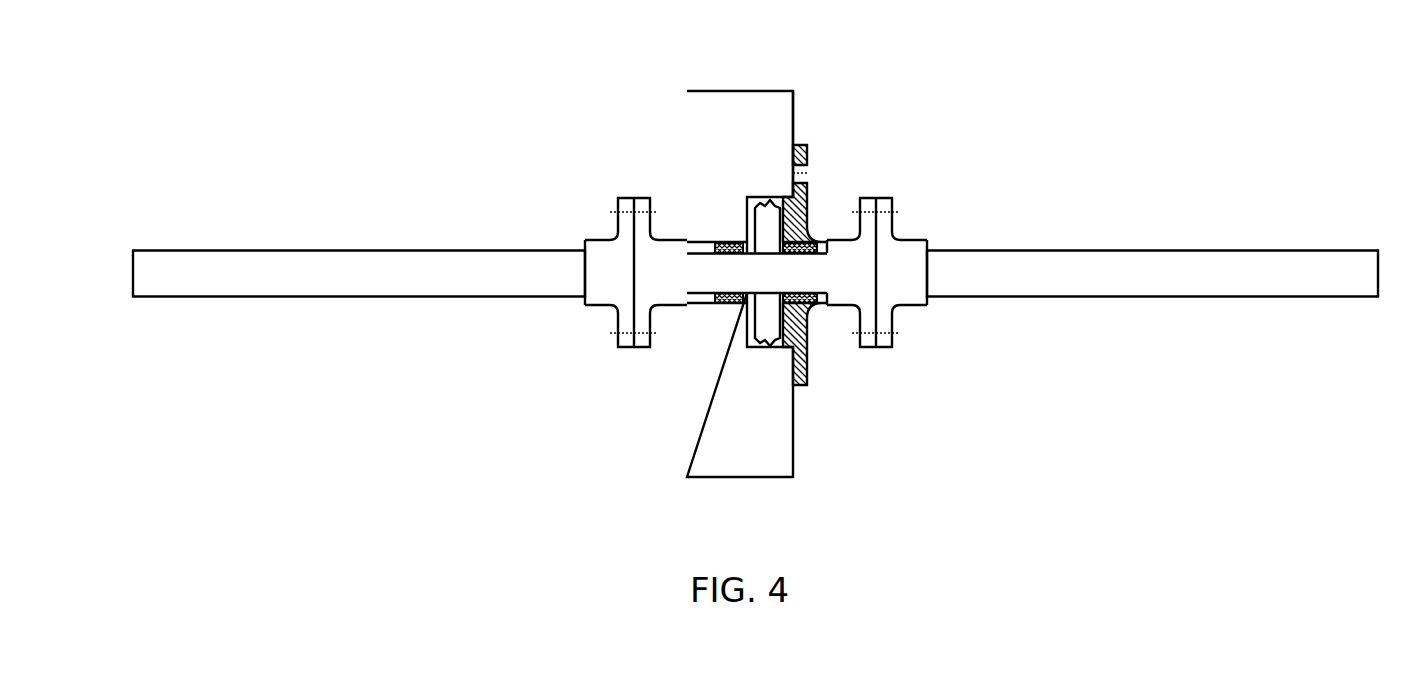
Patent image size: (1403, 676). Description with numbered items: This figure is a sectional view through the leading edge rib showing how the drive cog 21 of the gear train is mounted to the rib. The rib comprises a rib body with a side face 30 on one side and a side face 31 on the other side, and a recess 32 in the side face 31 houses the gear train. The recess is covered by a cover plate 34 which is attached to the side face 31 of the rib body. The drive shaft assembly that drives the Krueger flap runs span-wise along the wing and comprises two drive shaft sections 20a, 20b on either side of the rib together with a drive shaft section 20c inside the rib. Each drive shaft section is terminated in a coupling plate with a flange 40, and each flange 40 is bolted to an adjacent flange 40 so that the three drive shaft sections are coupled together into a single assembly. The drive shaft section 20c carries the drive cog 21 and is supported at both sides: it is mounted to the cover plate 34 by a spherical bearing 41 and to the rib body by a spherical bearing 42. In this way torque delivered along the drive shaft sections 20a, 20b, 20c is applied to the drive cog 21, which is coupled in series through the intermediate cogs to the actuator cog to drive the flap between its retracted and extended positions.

The drive shaft section 20a is at (1182, 249).
The drive shaft section 20b is at (322, 249).
The drive shaft section 20c is at (763, 272).
The drive cog 21 is at (772, 218).
The side face 30 is at (686, 389).
The side face 31 is at (793, 107).
The recess 32 is at (757, 202).
The cover plate 34 is at (797, 217).
The flange 40 is at (648, 205).
The spherical bearing 41 is at (812, 332).
The spherical bearing 42 is at (732, 243).